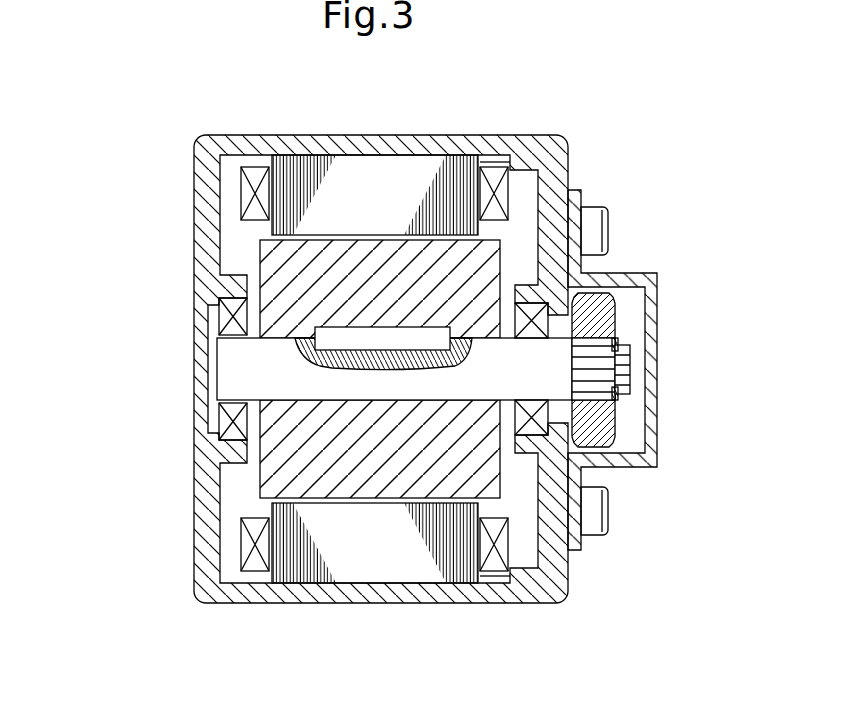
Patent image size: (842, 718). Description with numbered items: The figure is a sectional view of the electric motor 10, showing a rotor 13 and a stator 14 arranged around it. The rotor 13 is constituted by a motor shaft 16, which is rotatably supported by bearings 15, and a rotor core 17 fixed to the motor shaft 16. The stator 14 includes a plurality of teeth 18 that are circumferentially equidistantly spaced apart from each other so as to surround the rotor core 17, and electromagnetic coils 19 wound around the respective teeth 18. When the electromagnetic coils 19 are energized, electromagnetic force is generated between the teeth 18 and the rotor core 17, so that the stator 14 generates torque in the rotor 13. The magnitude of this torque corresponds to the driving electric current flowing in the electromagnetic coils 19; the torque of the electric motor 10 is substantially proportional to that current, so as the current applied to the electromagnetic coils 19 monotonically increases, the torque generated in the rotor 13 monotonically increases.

The electric motor 10 is at (220, 158).
The rotor 13 is at (258, 262).
The stator 14 is at (243, 205).
The bearings 15 is at (222, 418).
The motor shaft 16 is at (623, 367).
The rotor core 17 is at (480, 272).
The teeth 18 is at (381, 175).
The electromagnetic coils 19 is at (494, 178).